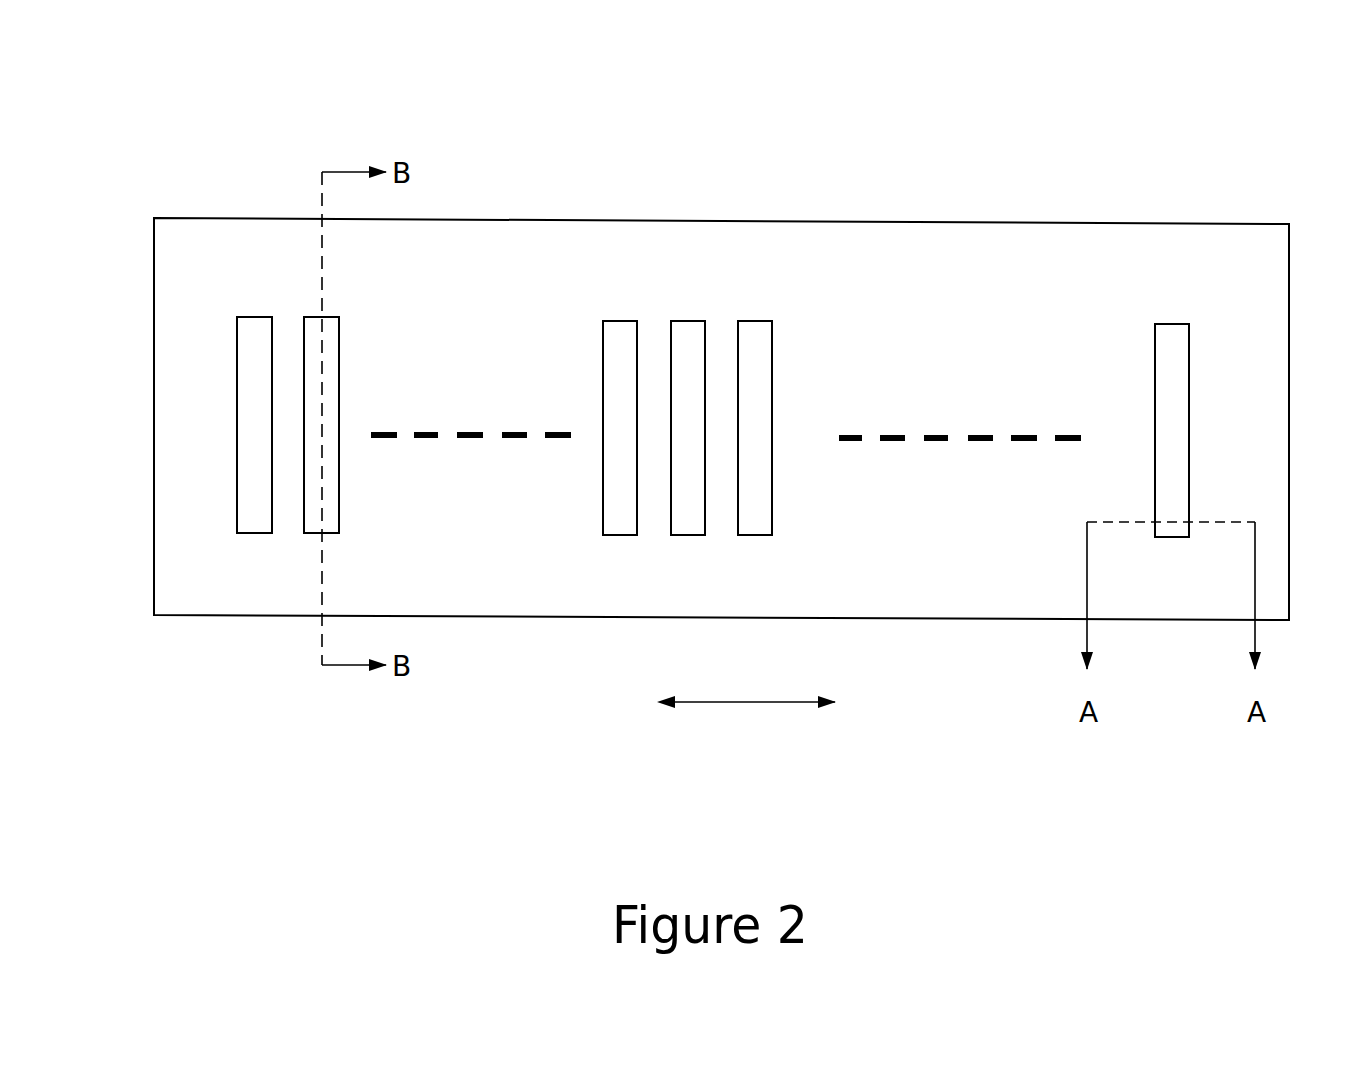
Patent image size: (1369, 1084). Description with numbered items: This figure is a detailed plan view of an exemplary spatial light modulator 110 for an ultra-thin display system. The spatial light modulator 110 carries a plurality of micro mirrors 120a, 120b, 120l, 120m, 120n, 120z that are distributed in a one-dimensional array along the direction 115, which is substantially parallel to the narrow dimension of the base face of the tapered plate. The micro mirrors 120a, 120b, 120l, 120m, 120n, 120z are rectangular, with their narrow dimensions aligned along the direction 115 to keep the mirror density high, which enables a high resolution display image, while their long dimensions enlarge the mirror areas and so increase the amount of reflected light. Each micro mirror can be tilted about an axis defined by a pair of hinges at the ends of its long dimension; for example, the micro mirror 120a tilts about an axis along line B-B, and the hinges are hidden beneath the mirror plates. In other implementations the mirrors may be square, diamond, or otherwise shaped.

The spatial light modulator 110 is at (1207, 222).
The direction 115 is at (754, 728).
The micro mirror 120a is at (236, 380).
The micro mirror 120b is at (303, 314).
The micro mirror 120l is at (621, 318).
The micro mirror 120m is at (686, 318).
The micro mirror 120n is at (752, 318).
The micro mirror 120z is at (1169, 321).